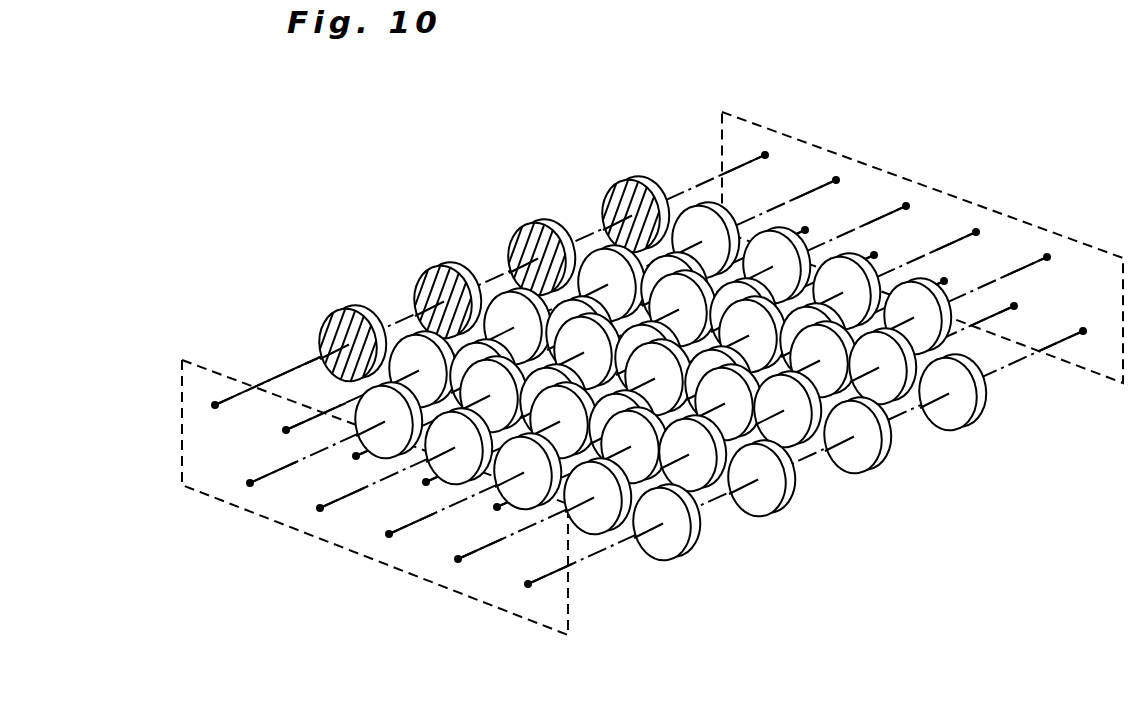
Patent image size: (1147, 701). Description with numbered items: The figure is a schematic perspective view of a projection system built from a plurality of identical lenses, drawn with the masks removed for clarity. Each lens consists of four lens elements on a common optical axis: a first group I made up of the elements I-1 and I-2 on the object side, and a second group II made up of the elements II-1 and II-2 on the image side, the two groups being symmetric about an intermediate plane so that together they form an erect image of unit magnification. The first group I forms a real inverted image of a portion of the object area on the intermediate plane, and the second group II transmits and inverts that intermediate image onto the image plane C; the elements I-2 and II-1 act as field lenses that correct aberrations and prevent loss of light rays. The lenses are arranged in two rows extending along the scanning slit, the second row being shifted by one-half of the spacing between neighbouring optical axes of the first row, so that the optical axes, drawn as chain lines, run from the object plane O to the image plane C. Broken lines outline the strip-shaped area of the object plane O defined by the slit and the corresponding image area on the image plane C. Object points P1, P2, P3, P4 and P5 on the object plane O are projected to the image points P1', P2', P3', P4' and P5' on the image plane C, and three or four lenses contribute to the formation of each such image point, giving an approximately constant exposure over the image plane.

The object plane O is at (207, 367).
The image plane C is at (875, 162).
The object point P1 is at (454, 295).
The object point P2 is at (505, 382).
The object point P3 is at (543, 319).
The object point P4 is at (586, 413).
The object point P5 is at (602, 355).
The image point P1' is at (784, 122).
The image point P2' is at (832, 208).
The image point P3' is at (856, 146).
The image point P4' is at (903, 236).
The image point P5' is at (929, 176).
The first lens element group I is at (407, 218).
The first lens element I-1 is at (322, 319).
The second lens element I-2 is at (416, 273).
The second lens element group II is at (617, 130).
The third lens element II-1 is at (515, 239).
The fourth lens element II-2 is at (617, 185).